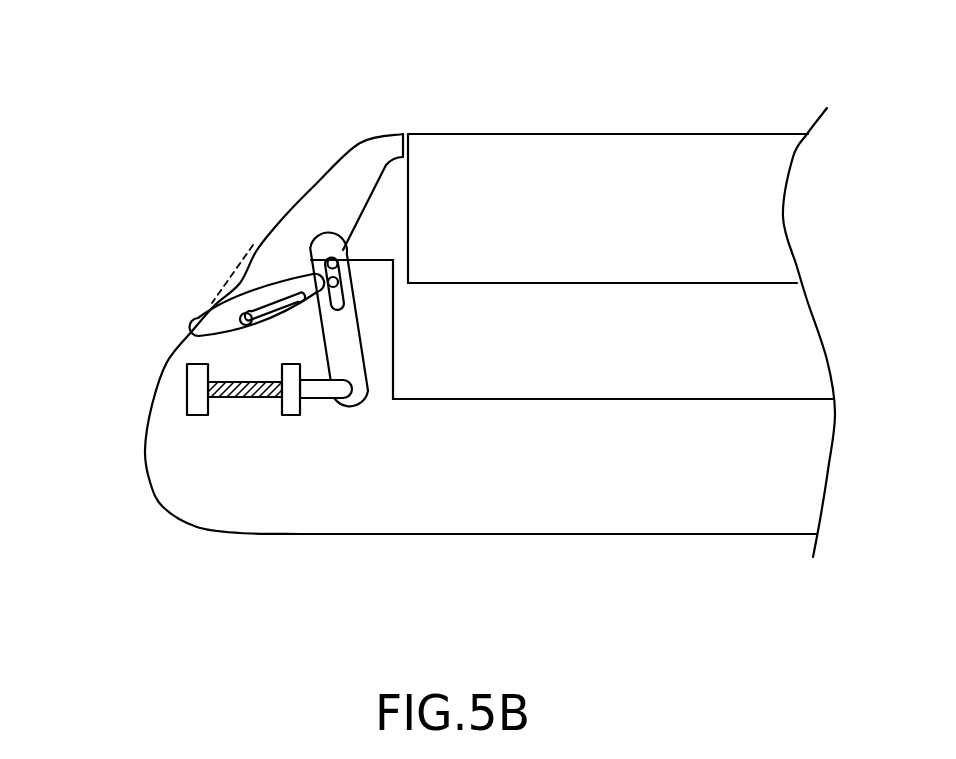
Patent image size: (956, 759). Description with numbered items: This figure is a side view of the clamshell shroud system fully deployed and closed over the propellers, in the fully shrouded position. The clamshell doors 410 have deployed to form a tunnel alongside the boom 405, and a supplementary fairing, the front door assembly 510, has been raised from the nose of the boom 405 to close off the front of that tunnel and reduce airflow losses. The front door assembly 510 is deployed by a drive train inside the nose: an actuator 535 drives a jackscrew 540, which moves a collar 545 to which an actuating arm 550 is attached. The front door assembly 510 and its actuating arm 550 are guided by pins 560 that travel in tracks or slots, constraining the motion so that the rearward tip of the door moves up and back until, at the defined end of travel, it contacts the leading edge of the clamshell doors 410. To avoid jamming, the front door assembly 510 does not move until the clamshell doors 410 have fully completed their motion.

The boom 405 is at (777, 490).
The clamshell doors 410 is at (610, 153).
The front door assembly 510 is at (318, 183).
The actuator 535 is at (198, 403).
The jackscrew 540 is at (250, 395).
The collar 545 is at (297, 407).
The actuating arm 550 is at (350, 353).
The pins 560 is at (343, 282).